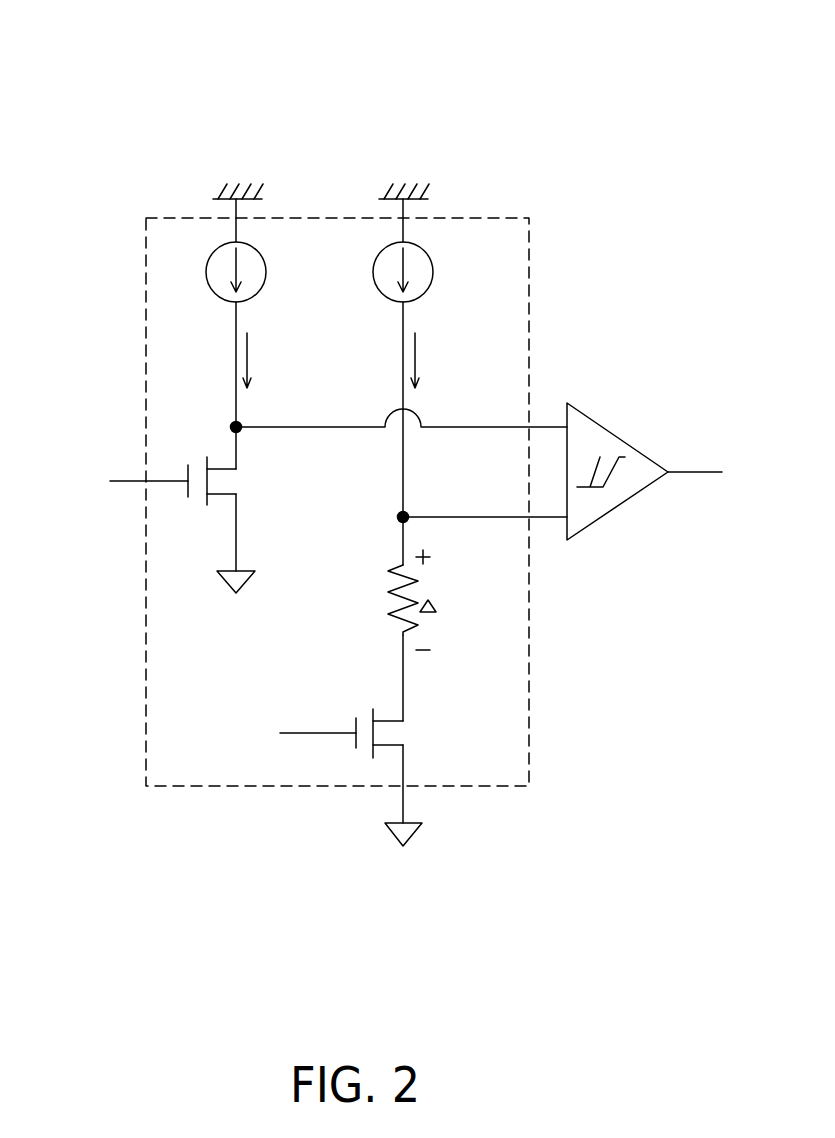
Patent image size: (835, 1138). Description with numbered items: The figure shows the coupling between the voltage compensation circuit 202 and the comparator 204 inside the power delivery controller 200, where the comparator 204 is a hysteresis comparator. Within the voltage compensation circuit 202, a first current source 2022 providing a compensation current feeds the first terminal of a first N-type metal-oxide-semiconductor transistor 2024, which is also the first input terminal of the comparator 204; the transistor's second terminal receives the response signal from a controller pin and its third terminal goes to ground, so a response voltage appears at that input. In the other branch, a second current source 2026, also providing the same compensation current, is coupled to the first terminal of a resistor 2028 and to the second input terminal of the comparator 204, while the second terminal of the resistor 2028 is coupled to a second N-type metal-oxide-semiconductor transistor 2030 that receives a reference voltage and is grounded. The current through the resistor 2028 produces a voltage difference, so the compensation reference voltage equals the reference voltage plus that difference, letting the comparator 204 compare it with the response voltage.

The power delivery controller 200 is at (146, 74).
The voltage compensation circuit 202 is at (530, 244).
The first current source 2022 is at (266, 258).
The first N-type metal-oxide-semiconductor transistor 2024 is at (240, 484).
The second current source 2026 is at (432, 290).
The resistor 2028 is at (390, 604).
The second N-type metal-oxide-semiconductor transistor 2030 is at (406, 737).
The comparator 204 is at (628, 497).